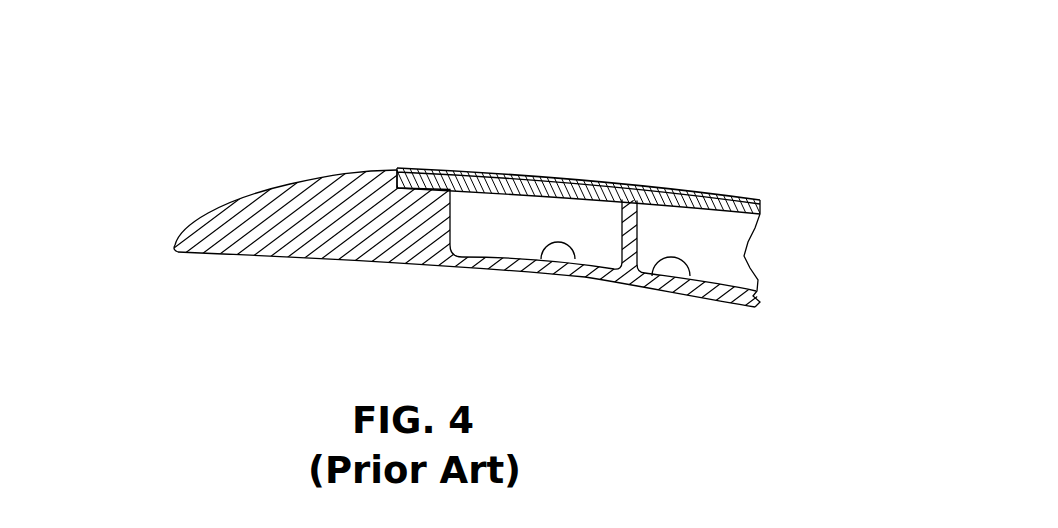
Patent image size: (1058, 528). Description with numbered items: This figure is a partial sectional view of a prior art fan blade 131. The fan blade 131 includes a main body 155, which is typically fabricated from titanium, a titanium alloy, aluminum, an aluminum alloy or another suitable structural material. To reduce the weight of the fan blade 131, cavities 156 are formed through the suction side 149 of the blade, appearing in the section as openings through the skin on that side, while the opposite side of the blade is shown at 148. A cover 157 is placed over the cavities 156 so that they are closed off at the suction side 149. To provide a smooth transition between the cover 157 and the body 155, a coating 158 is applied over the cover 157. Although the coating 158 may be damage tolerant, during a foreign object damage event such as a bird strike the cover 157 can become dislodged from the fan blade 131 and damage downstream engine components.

The fan blade 131 is at (700, 158).
The lower skin 148 is at (362, 265).
The suction side 149 is at (353, 172).
The main body 155 is at (256, 226).
The cavities 156 is at (542, 247).
The cover 157 is at (582, 187).
The coating 158 is at (493, 170).